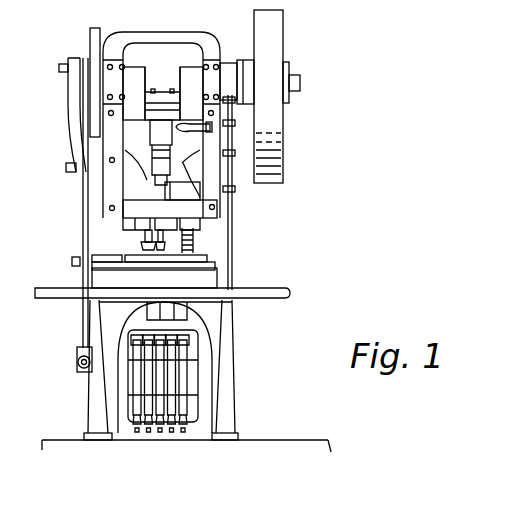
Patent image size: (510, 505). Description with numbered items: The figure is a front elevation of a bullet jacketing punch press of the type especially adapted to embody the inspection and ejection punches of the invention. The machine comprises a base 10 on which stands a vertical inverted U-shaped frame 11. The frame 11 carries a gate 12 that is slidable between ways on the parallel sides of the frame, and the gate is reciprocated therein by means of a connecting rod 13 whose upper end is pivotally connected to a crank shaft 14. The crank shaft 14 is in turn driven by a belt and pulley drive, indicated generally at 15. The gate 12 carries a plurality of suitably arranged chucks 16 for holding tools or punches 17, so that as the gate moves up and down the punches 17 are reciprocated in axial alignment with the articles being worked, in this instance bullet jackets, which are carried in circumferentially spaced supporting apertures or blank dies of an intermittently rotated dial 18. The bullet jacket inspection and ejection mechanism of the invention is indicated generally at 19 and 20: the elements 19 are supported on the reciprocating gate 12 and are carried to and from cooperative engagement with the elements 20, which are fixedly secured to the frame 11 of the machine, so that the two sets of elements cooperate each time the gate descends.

The base 10 is at (97, 382).
The frame 11 is at (113, 142).
The gate 12 is at (137, 175).
The connecting rod 13 is at (150, 151).
The crank shaft 14 is at (232, 72).
The belt and pulley drive 15 is at (273, 137).
The chucks 16 is at (152, 231).
The punches 17 is at (147, 246).
The dial 18 is at (97, 268).
The inspection and ejection mechanism elements 19 is at (195, 205).
The inspection and ejection mechanism elements 20 is at (188, 135).